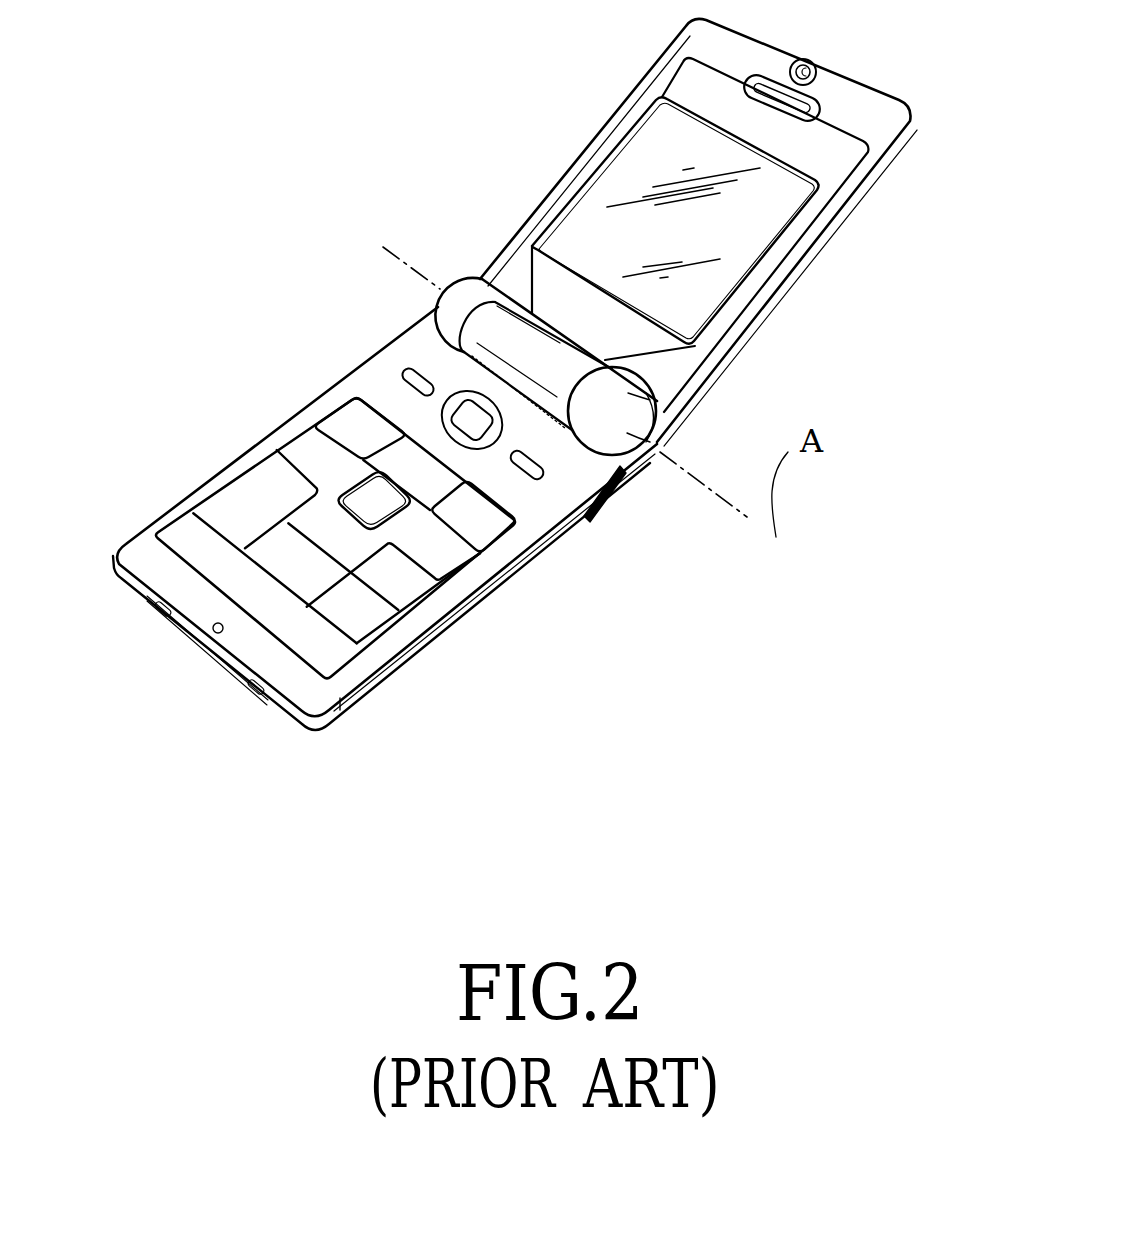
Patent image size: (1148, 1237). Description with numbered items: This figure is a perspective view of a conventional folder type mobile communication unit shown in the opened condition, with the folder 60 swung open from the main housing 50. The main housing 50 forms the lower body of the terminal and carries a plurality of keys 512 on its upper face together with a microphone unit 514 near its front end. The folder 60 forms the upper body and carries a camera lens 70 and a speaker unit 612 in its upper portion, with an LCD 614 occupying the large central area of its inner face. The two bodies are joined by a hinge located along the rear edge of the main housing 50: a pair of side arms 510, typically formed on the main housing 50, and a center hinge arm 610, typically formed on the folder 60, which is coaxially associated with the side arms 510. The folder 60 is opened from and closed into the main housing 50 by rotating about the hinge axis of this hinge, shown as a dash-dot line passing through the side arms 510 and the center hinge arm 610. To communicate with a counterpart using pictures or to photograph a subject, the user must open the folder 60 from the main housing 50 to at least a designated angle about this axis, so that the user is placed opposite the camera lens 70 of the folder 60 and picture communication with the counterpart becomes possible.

The main housing 50 is at (455, 627).
The folder 60 is at (790, 266).
The camera lens 70 is at (809, 62).
The side arms 510 is at (634, 394).
The keys 512 is at (230, 503).
The microphone unit 514 is at (210, 627).
The center hinge arm 610 is at (433, 312).
The speaker unit 612 is at (818, 103).
The LCD 614 is at (578, 222).